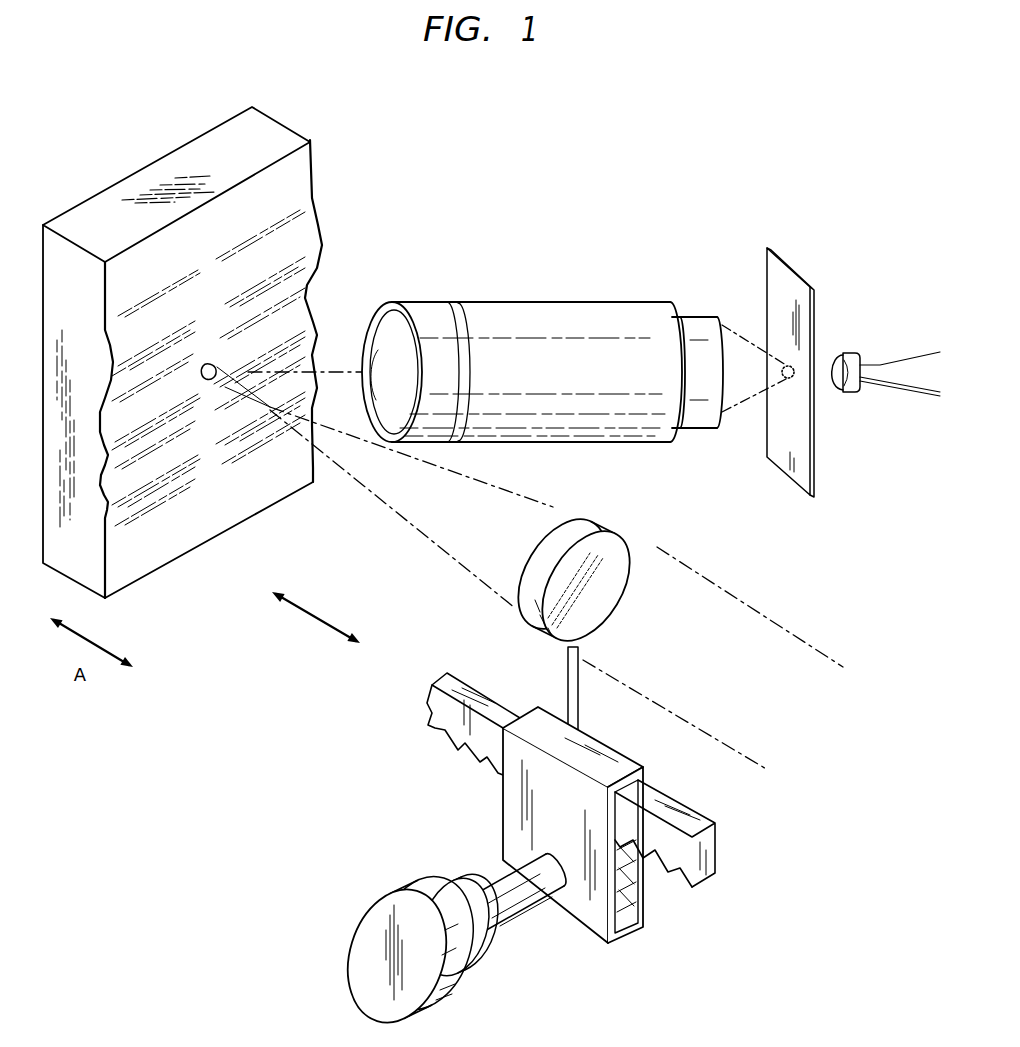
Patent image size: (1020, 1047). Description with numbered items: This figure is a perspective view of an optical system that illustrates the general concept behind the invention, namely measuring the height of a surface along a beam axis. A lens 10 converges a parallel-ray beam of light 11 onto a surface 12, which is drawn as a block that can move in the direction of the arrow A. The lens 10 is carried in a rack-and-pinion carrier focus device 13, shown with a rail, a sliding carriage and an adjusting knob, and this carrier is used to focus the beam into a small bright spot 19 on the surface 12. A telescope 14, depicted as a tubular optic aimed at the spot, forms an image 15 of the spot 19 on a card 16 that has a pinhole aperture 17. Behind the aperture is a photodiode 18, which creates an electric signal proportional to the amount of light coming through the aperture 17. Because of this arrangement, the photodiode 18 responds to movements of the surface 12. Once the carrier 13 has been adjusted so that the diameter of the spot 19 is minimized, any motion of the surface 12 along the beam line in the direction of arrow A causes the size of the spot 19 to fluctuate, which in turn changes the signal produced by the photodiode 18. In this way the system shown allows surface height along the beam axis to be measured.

The lens 10 is at (604, 565).
The parallel-ray beam of light 11 is at (725, 618).
The surface 12 is at (308, 197).
The rack-and-pinion carrier focus device 13 is at (390, 806).
The telescope 14 is at (540, 303).
The image 15 is at (778, 338).
The card 16 is at (785, 258).
The pinhole aperture 17 is at (788, 381).
The photodiode 18 is at (855, 394).
The spot 19 is at (206, 363).